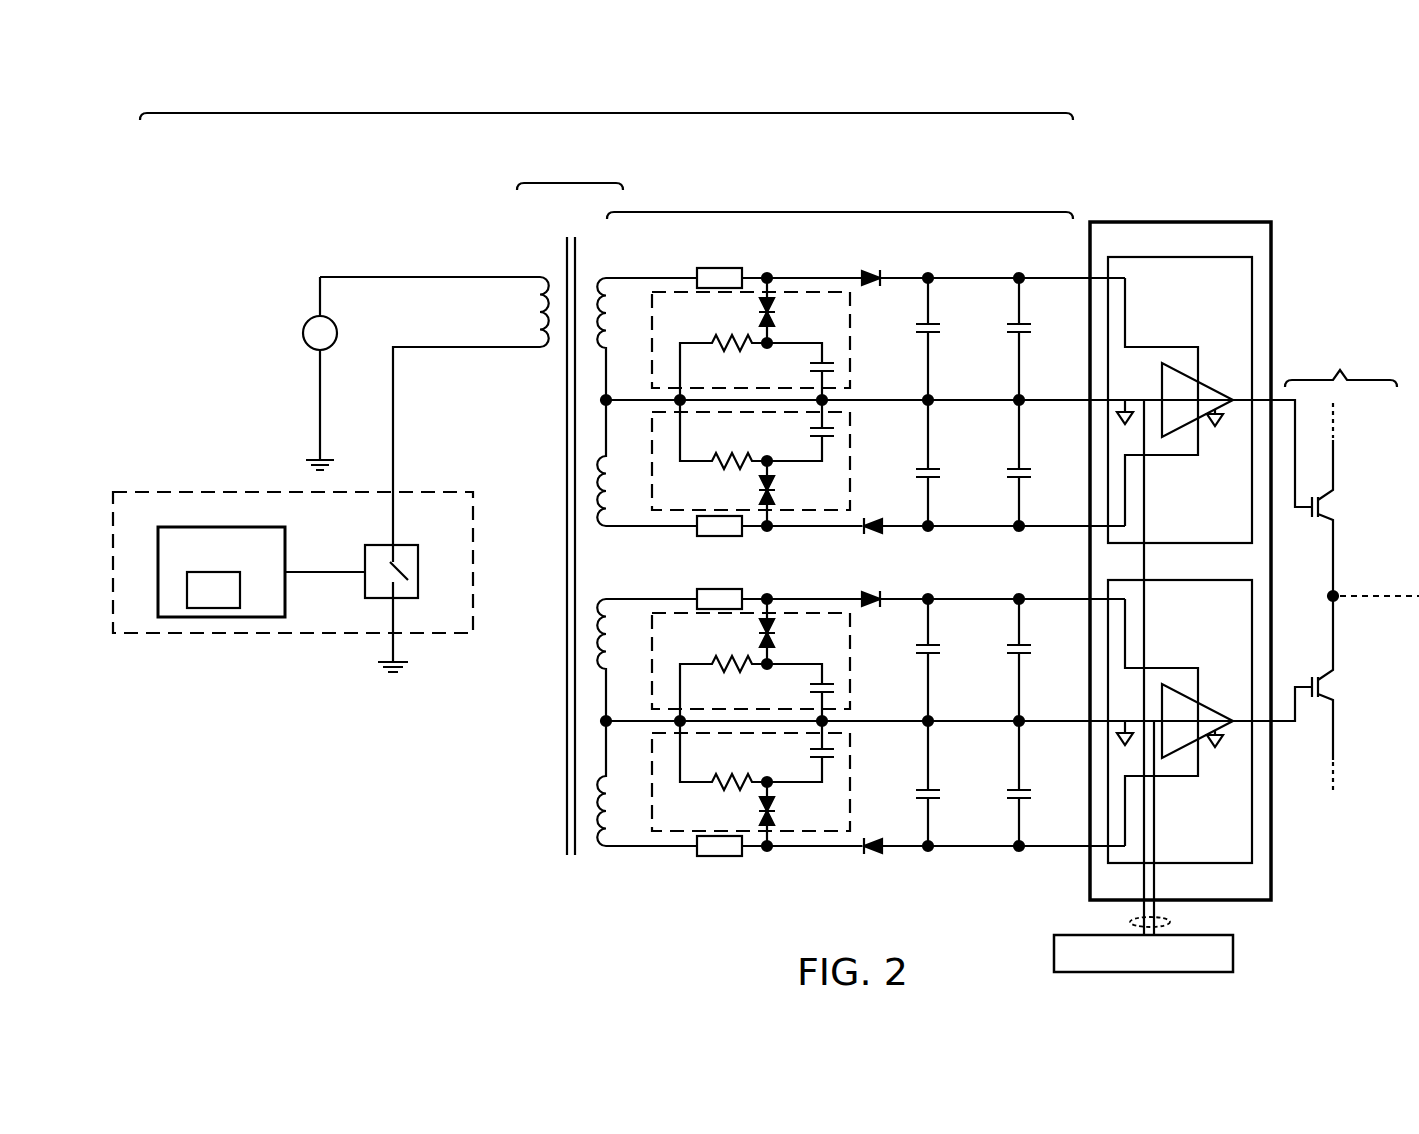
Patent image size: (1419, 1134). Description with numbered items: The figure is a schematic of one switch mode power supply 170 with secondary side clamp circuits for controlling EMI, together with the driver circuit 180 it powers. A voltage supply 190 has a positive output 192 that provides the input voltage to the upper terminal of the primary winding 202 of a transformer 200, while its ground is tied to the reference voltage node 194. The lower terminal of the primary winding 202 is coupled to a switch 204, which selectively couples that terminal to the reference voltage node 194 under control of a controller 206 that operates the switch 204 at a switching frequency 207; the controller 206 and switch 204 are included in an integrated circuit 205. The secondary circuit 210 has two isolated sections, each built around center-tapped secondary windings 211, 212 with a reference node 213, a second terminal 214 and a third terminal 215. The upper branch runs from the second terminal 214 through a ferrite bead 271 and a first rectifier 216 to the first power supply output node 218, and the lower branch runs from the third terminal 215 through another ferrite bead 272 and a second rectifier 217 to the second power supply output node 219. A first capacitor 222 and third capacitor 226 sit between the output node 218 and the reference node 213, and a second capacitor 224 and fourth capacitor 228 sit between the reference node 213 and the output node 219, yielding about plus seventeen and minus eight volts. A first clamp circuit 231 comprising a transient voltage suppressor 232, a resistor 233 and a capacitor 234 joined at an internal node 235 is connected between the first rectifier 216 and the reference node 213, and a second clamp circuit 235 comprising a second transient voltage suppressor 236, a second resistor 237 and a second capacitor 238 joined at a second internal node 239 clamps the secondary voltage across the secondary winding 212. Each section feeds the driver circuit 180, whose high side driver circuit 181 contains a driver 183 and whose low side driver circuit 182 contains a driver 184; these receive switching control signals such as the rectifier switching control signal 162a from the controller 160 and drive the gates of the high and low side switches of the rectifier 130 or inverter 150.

The rectifier 130 is at (1342, 373).
The inverter 150 is at (1254, 691).
The controller 160 is at (1054, 958).
The rectifier switching control signal 162a is at (1128, 926).
The switch mode power supply 170 is at (606, 113).
The driver circuit 180 is at (1185, 222).
The high side driver circuit 181 is at (1205, 257).
The low side driver circuit 182 is at (1205, 581).
The driver 183 is at (1202, 386).
The driver 184 is at (1202, 707).
The voltage supply 190 is at (303, 333).
The positive output 192 is at (440, 277).
The reference voltage node 194 is at (320, 384).
The transformer 200 is at (572, 183).
The primary winding 202 is at (522, 312).
The switch 204 is at (411, 548).
The integrated circuit 205 is at (274, 492).
The controller 206 is at (178, 527).
The switching frequency 207 is at (187, 592).
The secondary circuit 210 is at (840, 212).
The secondary winding 211 is at (596, 304).
The secondary winding 212 is at (596, 490).
The reference node 213 is at (606, 384).
The second terminal 214 is at (644, 278).
The third terminal 215 is at (643, 526).
The first rectifier 216 is at (870, 268).
The second rectifier 217 is at (870, 541).
The first power supply output node 218 is at (1073, 278).
The second power supply output node 219 is at (959, 526).
The first capacitor 222 is at (932, 331).
The second capacitor 224 is at (932, 476).
The third capacitor 226 is at (1023, 331).
The fourth capacitor 228 is at (1023, 476).
The first clamp circuit 231 is at (692, 290).
The transient voltage suppressor 232 is at (784, 314).
The resistor 233 is at (718, 336).
The capacitor 234 is at (836, 368).
The second clamp circuit 235 is at (822, 348).
The second transient voltage suppressor 236 is at (784, 489).
The second resistor 237 is at (722, 470).
The second capacitor 238 is at (836, 433).
The second internal node 239 is at (822, 457).
The ferrite bead 271 is at (722, 268).
The ferrite bead 272 is at (722, 536).